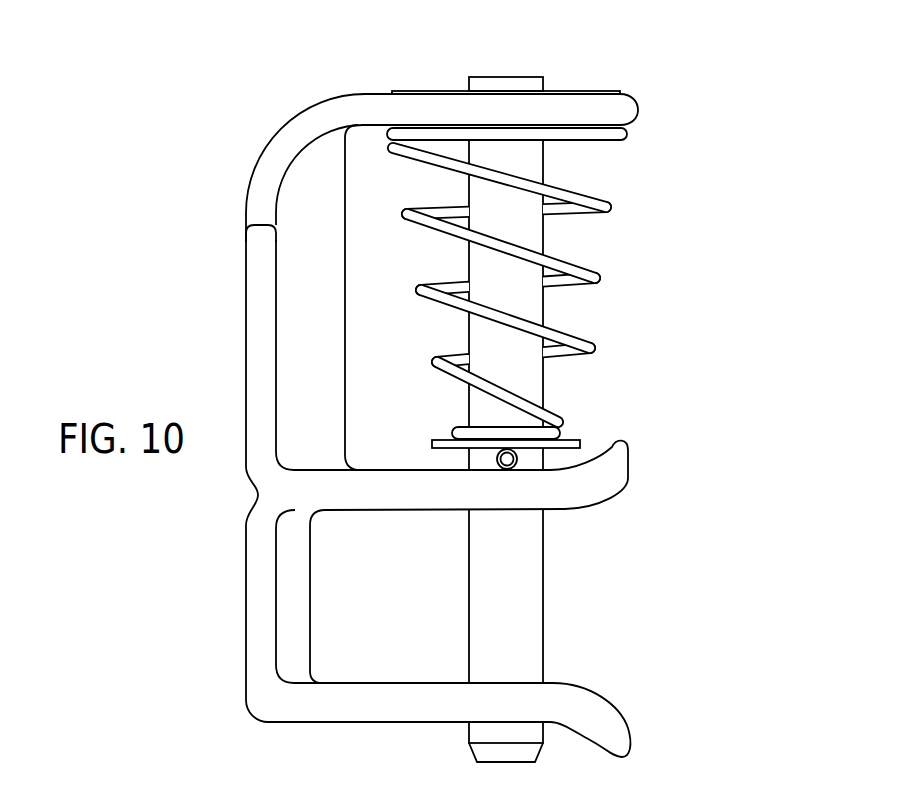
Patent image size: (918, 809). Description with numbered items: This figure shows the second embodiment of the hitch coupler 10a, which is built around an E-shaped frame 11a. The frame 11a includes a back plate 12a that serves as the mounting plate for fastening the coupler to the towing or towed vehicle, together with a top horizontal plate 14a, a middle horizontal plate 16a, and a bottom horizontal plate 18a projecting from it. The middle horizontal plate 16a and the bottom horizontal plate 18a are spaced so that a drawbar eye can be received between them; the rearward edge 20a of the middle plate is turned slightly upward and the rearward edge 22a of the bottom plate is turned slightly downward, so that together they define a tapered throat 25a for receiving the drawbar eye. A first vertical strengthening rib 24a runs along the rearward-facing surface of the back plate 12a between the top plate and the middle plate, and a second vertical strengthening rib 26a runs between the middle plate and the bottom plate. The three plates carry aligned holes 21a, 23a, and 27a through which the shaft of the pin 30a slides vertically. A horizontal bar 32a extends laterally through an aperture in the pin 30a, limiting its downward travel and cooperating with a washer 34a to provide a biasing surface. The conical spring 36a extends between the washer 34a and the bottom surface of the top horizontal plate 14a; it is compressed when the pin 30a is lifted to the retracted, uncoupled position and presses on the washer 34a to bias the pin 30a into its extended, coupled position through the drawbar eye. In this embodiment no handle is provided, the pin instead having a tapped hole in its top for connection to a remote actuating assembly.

The hitch coupler 10a is at (265, 77).
The frame 11a is at (255, 170).
The back plate 12a is at (253, 280).
The top horizontal plate 14a is at (377, 105).
The middle horizontal plate 16a is at (355, 505).
The bottom horizontal plate 18a is at (323, 710).
The rearward edge of middle plate 20a is at (617, 467).
The hole in top horizontal plate 21a is at (468, 92).
The rearward edge of bottom plate 22a is at (623, 727).
The hole in middle horizontal plate 23a is at (545, 515).
The first vertical strengthening rib 24a is at (284, 344).
The tapered throat 25a is at (607, 600).
The second vertical strengthening rib 26a is at (285, 630).
The hole in bottom horizontal plate 27a is at (460, 726).
The pin 30a is at (528, 227).
The horizontal bar 32a is at (508, 446).
The washer 34a is at (440, 436).
The conical spring 36a is at (578, 350).